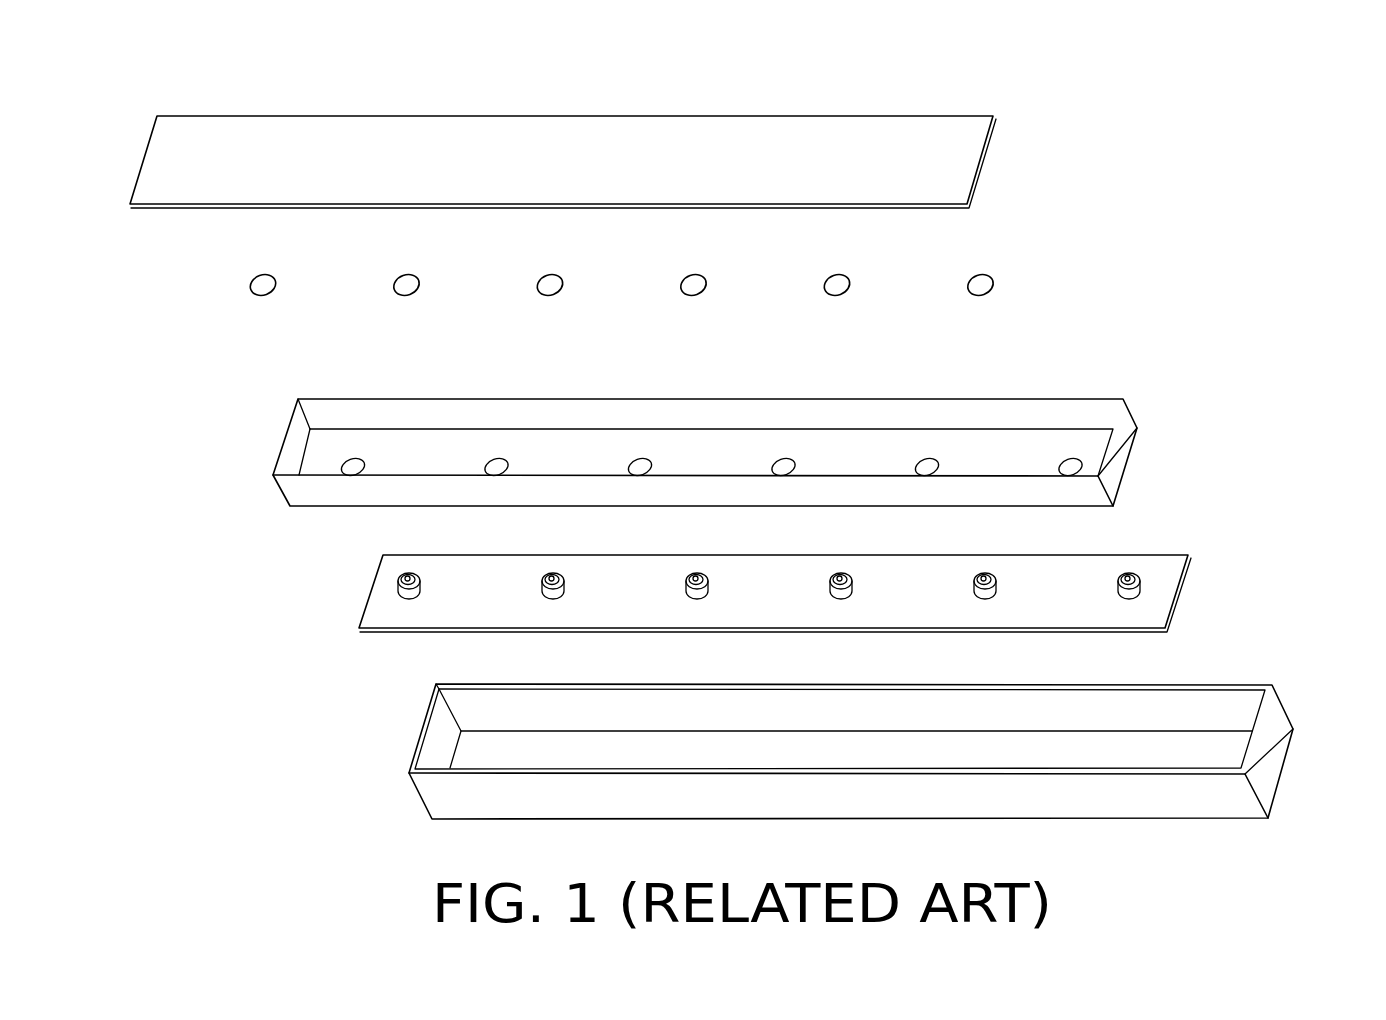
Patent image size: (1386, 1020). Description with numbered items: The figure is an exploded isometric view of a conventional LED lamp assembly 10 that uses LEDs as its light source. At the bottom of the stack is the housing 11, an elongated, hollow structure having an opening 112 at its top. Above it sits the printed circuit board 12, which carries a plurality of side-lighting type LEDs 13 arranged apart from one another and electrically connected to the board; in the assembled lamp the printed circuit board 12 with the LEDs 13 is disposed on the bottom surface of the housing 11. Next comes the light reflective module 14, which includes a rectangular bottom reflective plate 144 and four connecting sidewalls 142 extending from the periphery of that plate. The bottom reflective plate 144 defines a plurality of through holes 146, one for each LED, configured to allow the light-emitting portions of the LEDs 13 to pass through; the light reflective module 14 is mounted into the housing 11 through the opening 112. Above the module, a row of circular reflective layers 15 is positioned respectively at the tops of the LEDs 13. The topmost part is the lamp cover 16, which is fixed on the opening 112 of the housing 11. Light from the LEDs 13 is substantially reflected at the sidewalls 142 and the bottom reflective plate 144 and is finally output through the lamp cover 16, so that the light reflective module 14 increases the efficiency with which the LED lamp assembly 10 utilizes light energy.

The LED lamp assembly 10 is at (809, 53).
The housing 11 is at (881, 730).
The opening 112 is at (1192, 713).
The printed circuit board 12 is at (814, 576).
The side-lighting type LEDs 13 is at (1142, 585).
The light reflective module 14 is at (760, 419).
The connecting sidewalls 142 is at (820, 419).
The bottom reflective plate 144 is at (1036, 443).
The through holes 146 is at (930, 463).
The circular reflective layers 15 is at (982, 285).
The lamp cover 16 is at (933, 148).